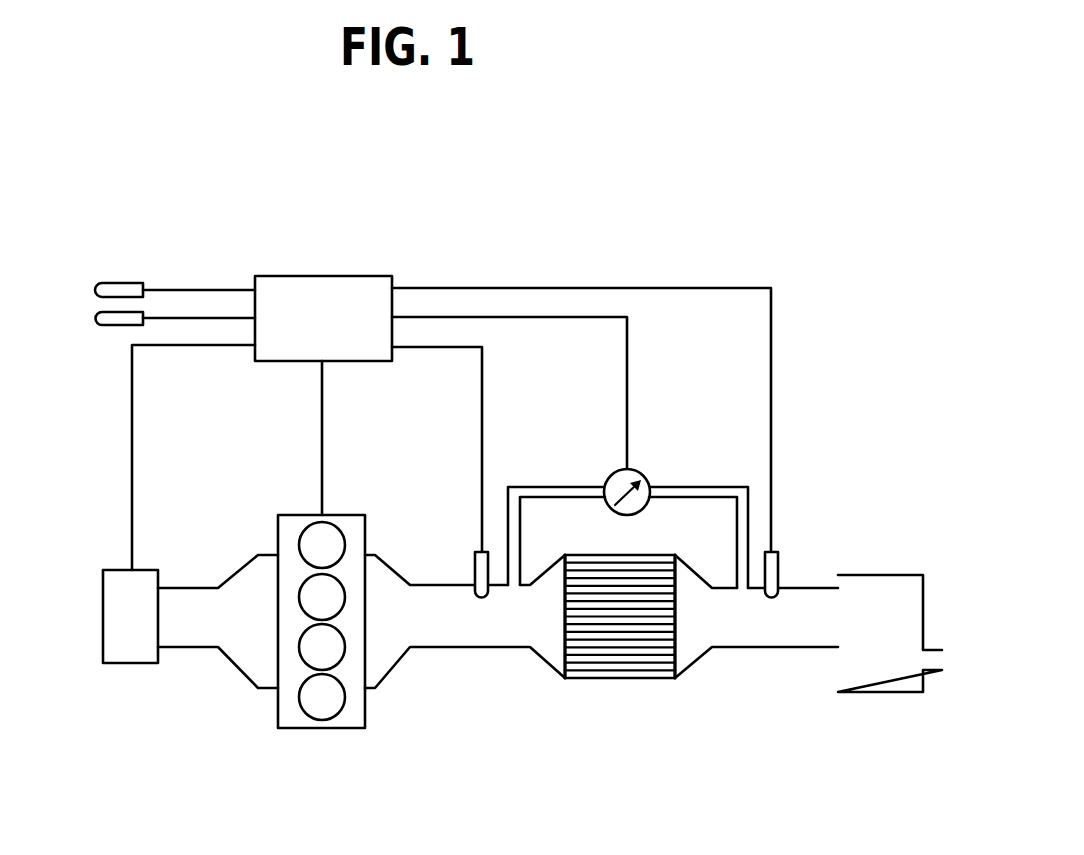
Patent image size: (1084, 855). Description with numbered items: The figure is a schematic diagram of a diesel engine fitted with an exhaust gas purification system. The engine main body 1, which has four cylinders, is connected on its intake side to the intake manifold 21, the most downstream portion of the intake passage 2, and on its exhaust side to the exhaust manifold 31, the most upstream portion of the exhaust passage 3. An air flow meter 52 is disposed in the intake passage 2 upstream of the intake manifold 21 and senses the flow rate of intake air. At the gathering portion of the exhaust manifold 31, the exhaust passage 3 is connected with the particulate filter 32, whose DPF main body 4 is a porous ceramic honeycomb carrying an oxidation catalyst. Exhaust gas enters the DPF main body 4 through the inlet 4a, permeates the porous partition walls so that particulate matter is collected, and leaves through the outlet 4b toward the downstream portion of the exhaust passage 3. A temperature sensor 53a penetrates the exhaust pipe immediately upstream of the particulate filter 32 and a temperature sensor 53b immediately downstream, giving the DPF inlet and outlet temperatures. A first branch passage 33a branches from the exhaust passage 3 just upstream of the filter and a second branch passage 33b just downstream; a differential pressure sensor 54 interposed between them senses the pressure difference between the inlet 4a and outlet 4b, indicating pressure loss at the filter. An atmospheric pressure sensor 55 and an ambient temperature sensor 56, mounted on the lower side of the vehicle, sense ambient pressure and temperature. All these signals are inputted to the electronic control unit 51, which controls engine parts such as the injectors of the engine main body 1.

The engine main body 1 is at (323, 728).
The intake passage 2 is at (218, 551).
The intake manifold 21 is at (252, 575).
The exhaust passage 3 is at (652, 585).
The exhaust manifold 31 is at (382, 575).
The particulate filter (DPF) 32 is at (686, 698).
The first branch passage 33a is at (540, 487).
The second branch passage 33b is at (720, 487).
The DPF main body 4 is at (647, 677).
The inlet 4a is at (565, 625).
The outlet 4b is at (677, 617).
The electronic control unit (ECU) 51 is at (321, 276).
The air flow meter 52 is at (127, 663).
The temperature sensor 53a is at (478, 572).
The temperature sensor 53b is at (777, 577).
The differential pressure sensor 54 is at (647, 478).
The atmospheric pressure sensor 55 is at (120, 283).
The ambient temperature sensor 56 is at (117, 325).